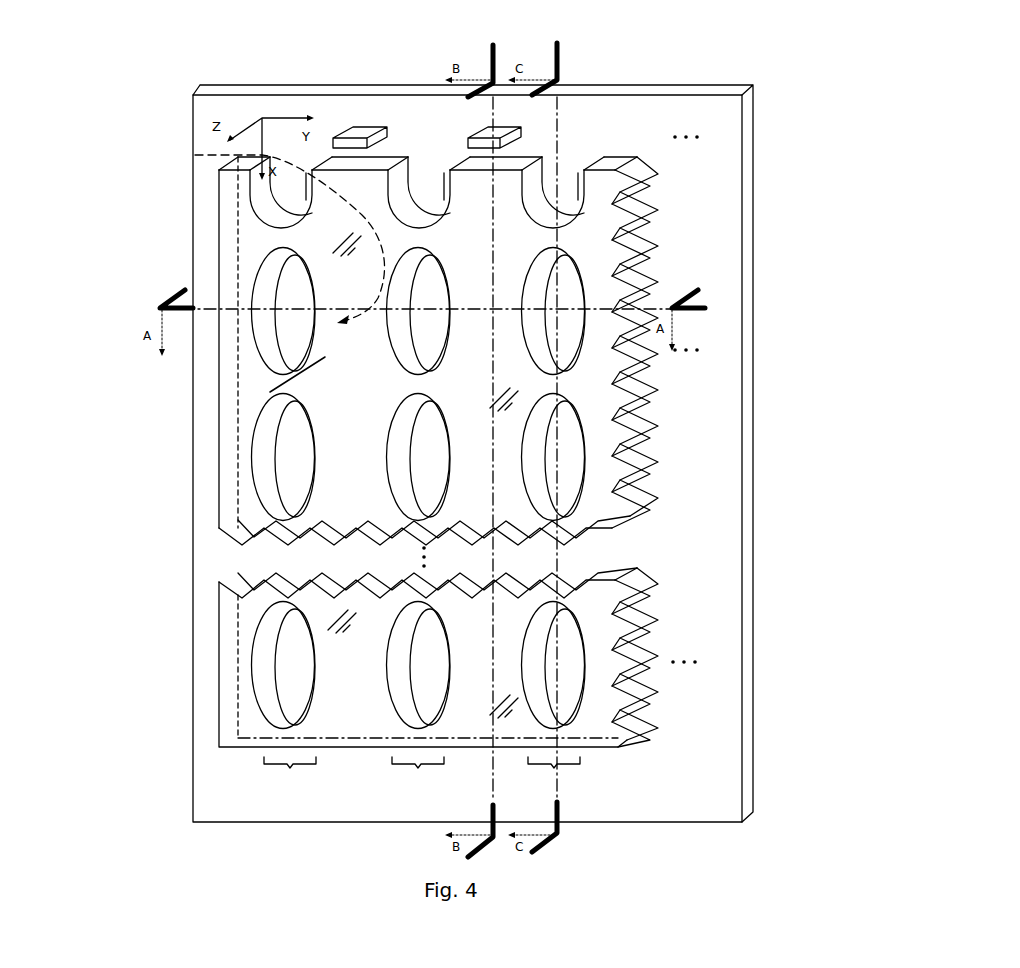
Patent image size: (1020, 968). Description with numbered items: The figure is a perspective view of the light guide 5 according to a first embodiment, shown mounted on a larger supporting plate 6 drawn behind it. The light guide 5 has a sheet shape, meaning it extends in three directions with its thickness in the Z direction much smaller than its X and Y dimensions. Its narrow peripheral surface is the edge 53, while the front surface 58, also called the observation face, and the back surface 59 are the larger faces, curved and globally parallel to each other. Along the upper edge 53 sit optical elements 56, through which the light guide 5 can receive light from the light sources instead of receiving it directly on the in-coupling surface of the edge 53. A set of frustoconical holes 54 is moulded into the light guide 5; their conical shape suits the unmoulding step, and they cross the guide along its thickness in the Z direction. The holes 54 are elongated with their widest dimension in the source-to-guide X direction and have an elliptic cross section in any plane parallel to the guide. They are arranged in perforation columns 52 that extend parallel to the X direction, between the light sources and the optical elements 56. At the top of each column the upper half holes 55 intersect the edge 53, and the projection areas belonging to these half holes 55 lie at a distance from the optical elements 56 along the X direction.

The light guide 5 is at (480, 407).
The base plate 6 is at (747, 197).
The perforation columns 52 is at (422, 777).
The edge 53 is at (602, 160).
The frustoconical holes 54 is at (288, 292).
The upper half holes 55 is at (290, 197).
The optical elements 56 is at (360, 130).
The front surface (observation face) 58 is at (326, 356).
The back surface 59 is at (195, 155).